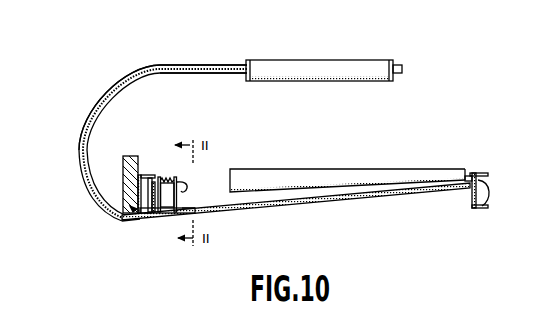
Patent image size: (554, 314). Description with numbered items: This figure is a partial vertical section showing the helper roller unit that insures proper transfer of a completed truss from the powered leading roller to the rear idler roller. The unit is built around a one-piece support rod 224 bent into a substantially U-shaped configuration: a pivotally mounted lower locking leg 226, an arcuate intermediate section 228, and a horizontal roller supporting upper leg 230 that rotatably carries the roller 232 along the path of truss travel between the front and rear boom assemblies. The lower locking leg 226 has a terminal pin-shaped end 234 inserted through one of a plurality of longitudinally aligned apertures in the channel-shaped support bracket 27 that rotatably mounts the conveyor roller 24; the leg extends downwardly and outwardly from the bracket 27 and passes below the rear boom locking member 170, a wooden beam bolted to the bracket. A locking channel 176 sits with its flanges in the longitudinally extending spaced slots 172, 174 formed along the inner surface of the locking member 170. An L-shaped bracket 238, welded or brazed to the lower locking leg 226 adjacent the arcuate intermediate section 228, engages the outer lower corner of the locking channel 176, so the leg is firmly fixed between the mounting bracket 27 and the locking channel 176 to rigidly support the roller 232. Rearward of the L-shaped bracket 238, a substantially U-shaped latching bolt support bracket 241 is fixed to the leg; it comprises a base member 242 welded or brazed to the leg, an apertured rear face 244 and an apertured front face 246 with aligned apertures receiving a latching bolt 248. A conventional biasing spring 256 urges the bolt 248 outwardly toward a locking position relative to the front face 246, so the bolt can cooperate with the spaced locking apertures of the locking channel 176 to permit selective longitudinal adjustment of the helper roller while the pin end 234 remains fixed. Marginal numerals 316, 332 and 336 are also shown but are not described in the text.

The conveyor roller 24 is at (322, 168).
The channel-shaped support bracket 27 is at (481, 171).
The rear boom locking member 170 is at (132, 155).
The slot 172 is at (122, 175).
The slot 174 is at (129, 222).
The locking channel 176 is at (146, 175).
The support rod 224 is at (77, 155).
The lower locking leg 226 is at (275, 210).
The arcuate intermediate section 228 is at (94, 115).
The upper leg 230 is at (198, 64).
The roller 232 is at (327, 59).
The pin-shaped end 234 is at (480, 209).
The L-shaped bracket 238 is at (148, 220).
The latching bolt support bracket 241 is at (196, 203).
The base member 242 is at (160, 214).
The apertured rear face 244 is at (188, 187).
The apertured front face 246 is at (133, 209).
The latching bolt 248 is at (186, 178).
The biasing spring 256 is at (185, 170).
The housing wall 316 is at (11, 58).
The housing member 332 is at (18, 308).
The housing wall 336 is at (11, 196).